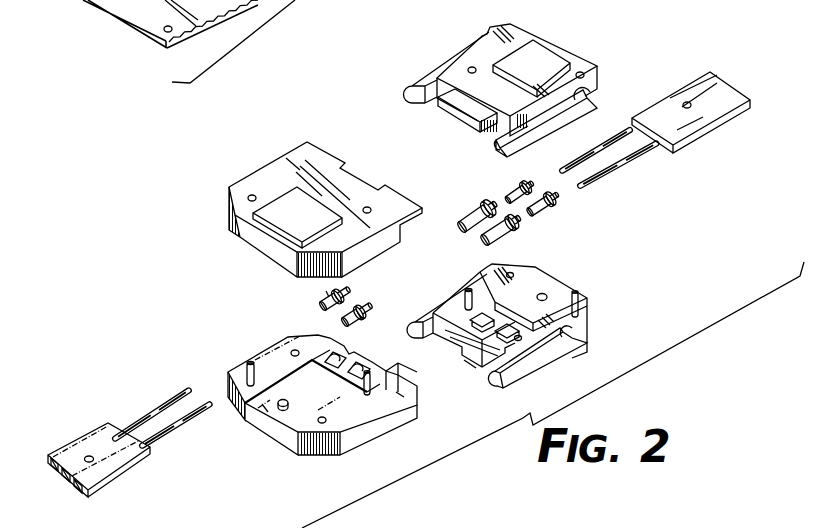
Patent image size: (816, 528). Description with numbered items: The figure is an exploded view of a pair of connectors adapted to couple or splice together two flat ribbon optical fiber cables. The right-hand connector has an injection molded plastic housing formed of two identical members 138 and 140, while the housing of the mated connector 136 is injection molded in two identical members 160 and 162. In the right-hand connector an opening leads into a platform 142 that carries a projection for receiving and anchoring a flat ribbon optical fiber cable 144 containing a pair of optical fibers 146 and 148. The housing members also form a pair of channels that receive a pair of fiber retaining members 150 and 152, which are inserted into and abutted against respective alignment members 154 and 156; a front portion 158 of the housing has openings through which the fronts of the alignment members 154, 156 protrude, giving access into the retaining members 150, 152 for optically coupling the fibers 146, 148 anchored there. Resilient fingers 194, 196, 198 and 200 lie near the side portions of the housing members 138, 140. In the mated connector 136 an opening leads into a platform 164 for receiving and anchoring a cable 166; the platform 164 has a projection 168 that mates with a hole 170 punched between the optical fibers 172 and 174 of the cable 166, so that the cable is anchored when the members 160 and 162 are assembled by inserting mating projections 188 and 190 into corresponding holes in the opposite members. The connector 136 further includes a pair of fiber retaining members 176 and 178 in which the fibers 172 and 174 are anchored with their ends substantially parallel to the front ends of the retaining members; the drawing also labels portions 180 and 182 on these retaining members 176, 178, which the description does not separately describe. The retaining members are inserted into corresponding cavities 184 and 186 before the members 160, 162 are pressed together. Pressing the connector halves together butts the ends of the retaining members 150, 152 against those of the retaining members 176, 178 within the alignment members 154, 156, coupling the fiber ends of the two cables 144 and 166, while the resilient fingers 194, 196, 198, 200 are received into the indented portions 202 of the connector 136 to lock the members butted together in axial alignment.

The connector 136 is at (309, 136).
The housing member 138 is at (590, 67).
The housing member 140 is at (587, 312).
The platform 142 is at (553, 278).
The flat ribbon optical fiber cable 144 is at (712, 117).
The optical fiber 146 is at (613, 135).
The optical fiber 148 is at (635, 157).
The fiber retaining member 150 is at (523, 180).
The fiber retaining member 152 is at (563, 208).
The alignment member 154 is at (475, 213).
The alignment member 156 is at (508, 235).
The front portion 158 is at (468, 365).
The housing member 160 is at (271, 166).
The housing member 162 is at (272, 345).
The platform 164 is at (265, 408).
The cable 166 is at (63, 450).
The projection 168 is at (282, 411).
The hole 170 is at (89, 456).
The optical fiber 172 is at (170, 395).
The optical fiber 174 is at (180, 425).
The fiber retaining member 176 is at (350, 290).
The fiber retaining member 178 is at (377, 306).
The pin head 180 is at (326, 294).
The pin head 182 is at (363, 317).
The cavity 184 is at (330, 357).
The cavity 186 is at (356, 394).
The mating projection 188 is at (246, 360).
The mating projection 190 is at (372, 395).
The resilient finger 194 is at (547, 127).
The resilient finger 196 is at (453, 57).
The resilient finger 198 is at (528, 368).
The resilient finger 200 is at (447, 290).
The indented portion 202 is at (398, 392).